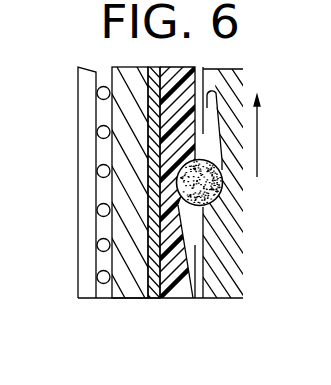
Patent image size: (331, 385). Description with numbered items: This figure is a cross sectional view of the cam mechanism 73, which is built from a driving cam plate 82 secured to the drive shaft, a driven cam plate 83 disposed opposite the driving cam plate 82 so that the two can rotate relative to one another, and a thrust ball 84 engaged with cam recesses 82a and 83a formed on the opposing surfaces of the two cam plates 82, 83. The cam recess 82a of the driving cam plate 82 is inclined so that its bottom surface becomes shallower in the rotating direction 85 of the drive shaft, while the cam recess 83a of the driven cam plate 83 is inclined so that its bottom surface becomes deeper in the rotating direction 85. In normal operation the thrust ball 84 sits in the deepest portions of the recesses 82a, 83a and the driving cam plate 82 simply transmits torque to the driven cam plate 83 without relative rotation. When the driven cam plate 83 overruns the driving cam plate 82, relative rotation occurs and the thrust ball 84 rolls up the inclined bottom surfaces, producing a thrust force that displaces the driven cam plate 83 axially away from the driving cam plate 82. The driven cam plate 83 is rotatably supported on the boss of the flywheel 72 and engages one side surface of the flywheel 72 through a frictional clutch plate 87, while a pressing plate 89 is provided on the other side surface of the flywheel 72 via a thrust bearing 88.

The flywheel 72 is at (128, 297).
The cam mechanism 73 is at (203, 298).
The driving cam plate 82 is at (228, 297).
The cam recess 82a is at (214, 116).
The driven cam plate 83 is at (178, 297).
The cam recess 83a is at (190, 236).
The thrust ball 84 is at (222, 190).
The rotating direction 85 is at (257, 140).
The frictional clutch plate 87 is at (152, 297).
The thrust bearing 88 is at (98, 88).
The pressing plate 89 is at (82, 160).